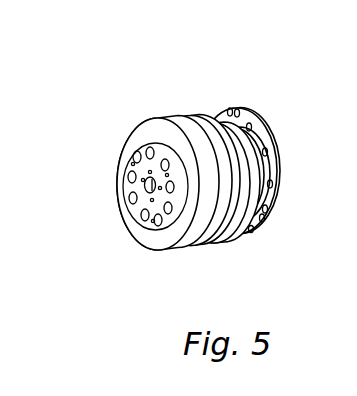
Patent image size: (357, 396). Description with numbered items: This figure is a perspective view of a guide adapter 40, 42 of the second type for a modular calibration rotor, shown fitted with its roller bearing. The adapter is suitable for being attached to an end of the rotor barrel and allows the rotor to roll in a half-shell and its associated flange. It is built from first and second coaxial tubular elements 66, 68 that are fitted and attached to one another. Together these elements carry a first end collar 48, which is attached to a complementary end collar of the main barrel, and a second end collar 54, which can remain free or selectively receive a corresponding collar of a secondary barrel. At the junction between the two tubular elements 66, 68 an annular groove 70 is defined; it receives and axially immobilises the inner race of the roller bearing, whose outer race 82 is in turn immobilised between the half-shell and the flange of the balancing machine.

The guide adapter 40 is at (198, 189).
The guide adapter 42 is at (201, 176).
The first end collar 48 is at (271, 137).
The second end collar 54 is at (145, 133).
The first tubular element 66 is at (210, 208).
The second tubular element 68 is at (253, 237).
The annular groove 70 is at (207, 167).
The outer race 82 is at (192, 117).